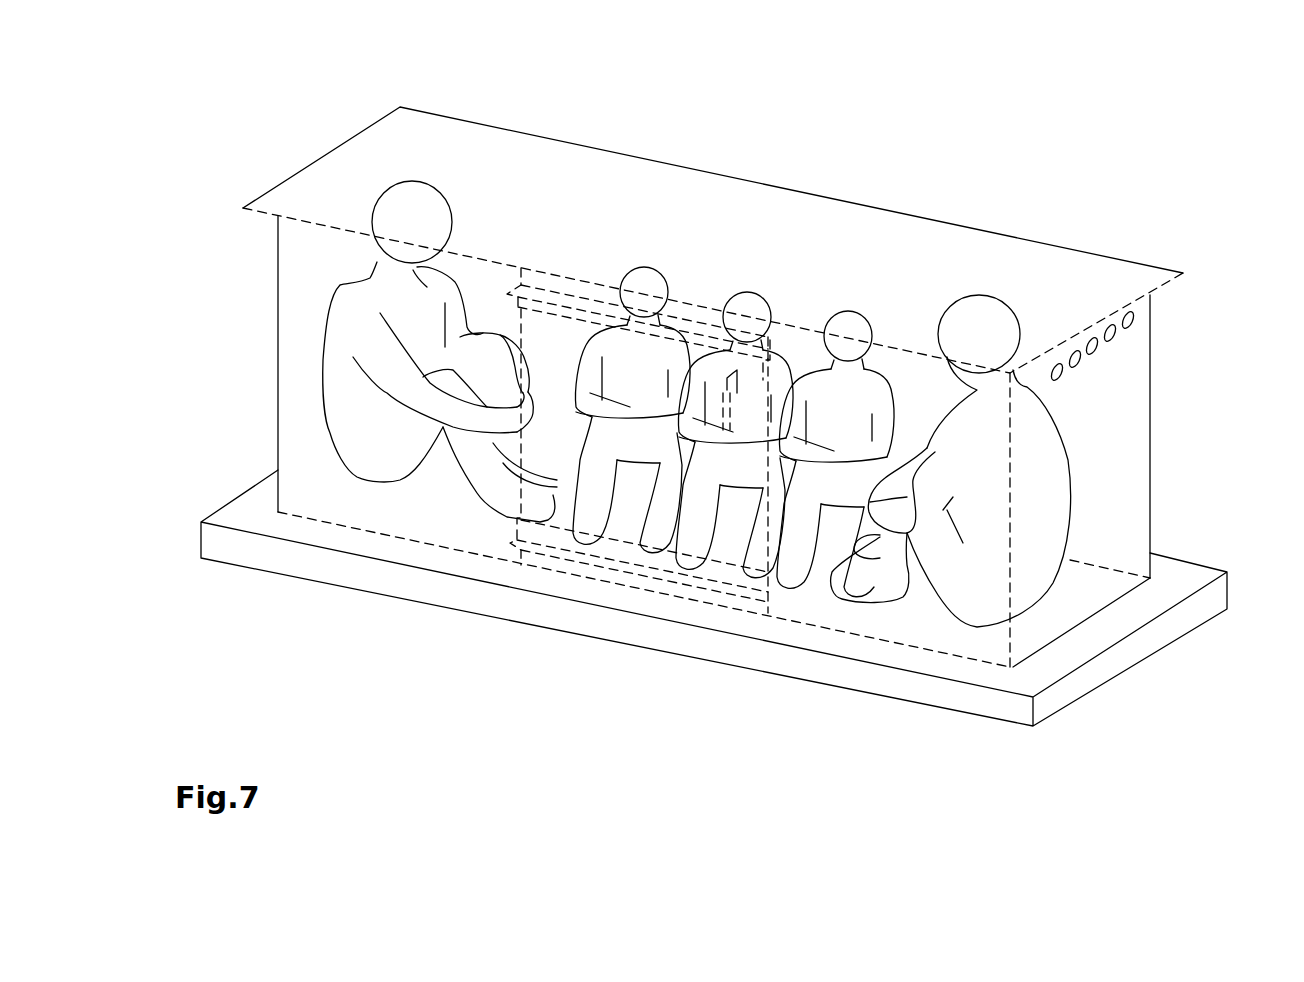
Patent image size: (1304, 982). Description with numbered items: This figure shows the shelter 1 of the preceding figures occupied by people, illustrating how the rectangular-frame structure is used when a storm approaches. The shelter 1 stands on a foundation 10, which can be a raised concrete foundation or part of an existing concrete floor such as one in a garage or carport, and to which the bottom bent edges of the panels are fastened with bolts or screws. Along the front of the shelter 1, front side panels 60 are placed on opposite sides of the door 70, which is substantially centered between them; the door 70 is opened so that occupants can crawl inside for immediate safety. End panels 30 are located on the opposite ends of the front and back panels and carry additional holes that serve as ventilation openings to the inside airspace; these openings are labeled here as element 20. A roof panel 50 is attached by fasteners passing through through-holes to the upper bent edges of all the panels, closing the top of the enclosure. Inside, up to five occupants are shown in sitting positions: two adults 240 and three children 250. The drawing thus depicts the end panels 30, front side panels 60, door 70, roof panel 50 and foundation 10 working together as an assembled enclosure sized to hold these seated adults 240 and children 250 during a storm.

The shelter 1 is at (268, 148).
The foundation 10 is at (340, 568).
The vents 20 is at (1130, 330).
The end panel 30 is at (1137, 482).
The roof panel 50 is at (587, 178).
The front side panel 60 is at (298, 363).
The door 70 is at (573, 505).
The adults 240 is at (1027, 568).
The children 250 is at (815, 370).